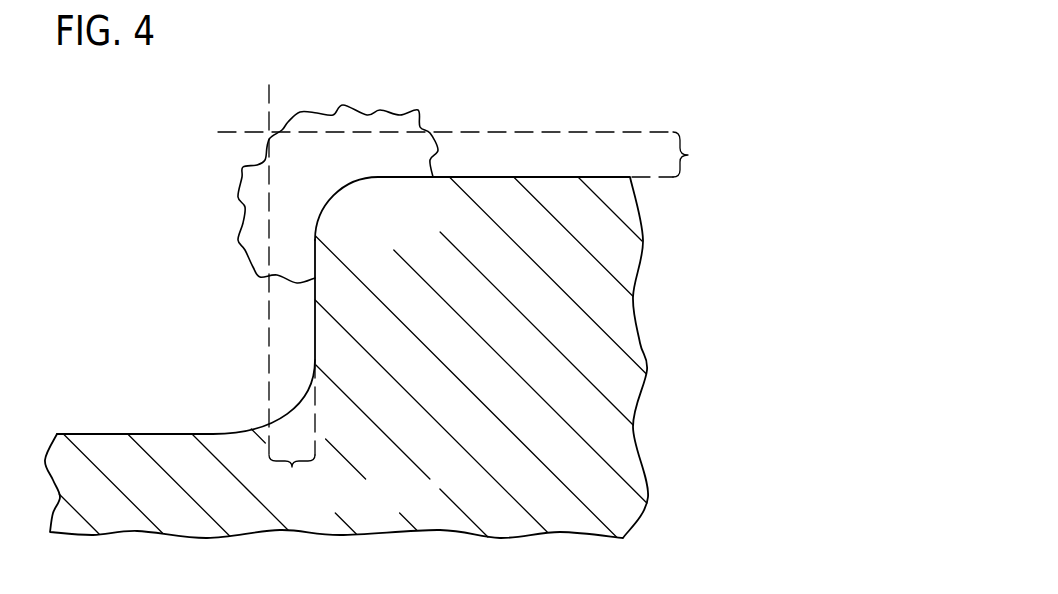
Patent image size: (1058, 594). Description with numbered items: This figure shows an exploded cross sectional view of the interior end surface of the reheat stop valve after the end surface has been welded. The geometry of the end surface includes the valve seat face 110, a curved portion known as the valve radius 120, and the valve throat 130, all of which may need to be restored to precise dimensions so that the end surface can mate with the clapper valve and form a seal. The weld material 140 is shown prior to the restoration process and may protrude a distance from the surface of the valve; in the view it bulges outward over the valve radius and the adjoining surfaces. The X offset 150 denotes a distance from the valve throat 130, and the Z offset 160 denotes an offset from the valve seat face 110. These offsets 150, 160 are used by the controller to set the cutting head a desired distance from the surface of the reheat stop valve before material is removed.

The valve seat face 110 is at (315, 328).
The valve radius 120 is at (338, 201).
The valve throat 130 is at (550, 194).
The weld material 140 is at (345, 106).
The X offset 150 is at (690, 155).
The Z offset 160 is at (292, 467).